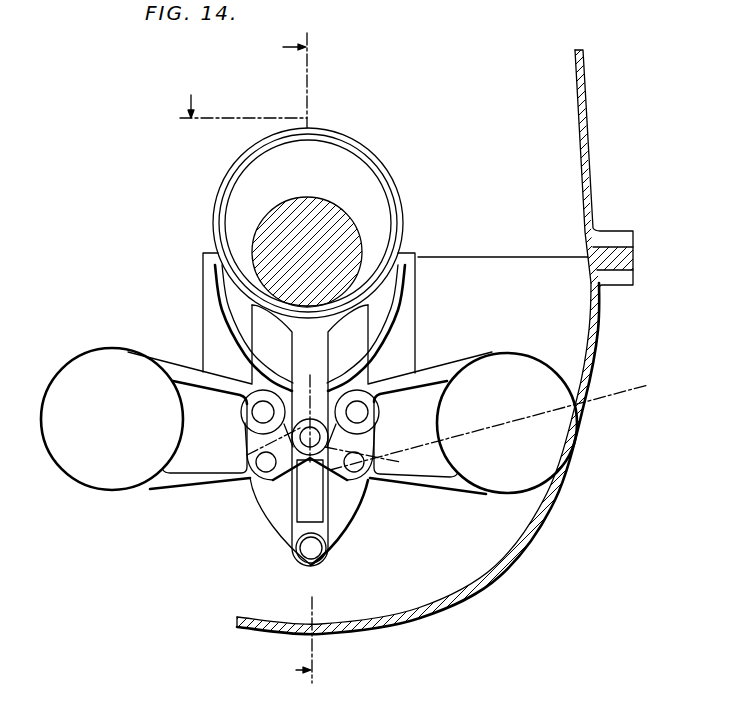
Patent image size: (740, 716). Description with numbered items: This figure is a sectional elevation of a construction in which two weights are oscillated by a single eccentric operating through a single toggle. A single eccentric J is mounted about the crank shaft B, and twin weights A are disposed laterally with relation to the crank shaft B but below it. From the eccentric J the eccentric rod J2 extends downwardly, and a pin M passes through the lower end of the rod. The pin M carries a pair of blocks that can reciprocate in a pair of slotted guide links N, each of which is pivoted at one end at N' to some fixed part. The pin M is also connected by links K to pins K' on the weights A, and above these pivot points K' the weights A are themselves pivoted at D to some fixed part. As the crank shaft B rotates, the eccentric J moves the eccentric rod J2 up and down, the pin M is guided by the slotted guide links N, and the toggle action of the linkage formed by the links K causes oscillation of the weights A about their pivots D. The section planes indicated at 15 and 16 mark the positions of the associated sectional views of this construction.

The eccentric J is at (348, 178).
The crank shaft B is at (325, 232).
The eccentric rod J2 is at (302, 343).
The weight pivot D is at (365, 406).
The pin on weight K' is at (245, 457).
The link K is at (247, 496).
The pin M is at (326, 460).
The slotted guide link N is at (282, 510).
The guide link pivot N' is at (291, 560).
The weight A is at (505, 478).
The section line 15 is at (414, 282).
The section line 16 is at (310, 358).